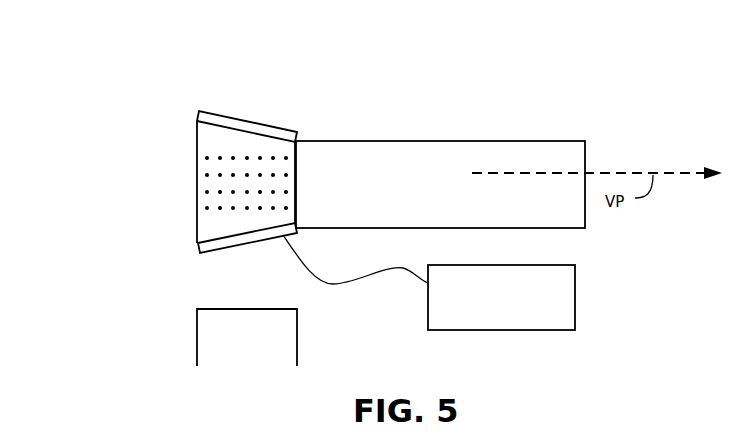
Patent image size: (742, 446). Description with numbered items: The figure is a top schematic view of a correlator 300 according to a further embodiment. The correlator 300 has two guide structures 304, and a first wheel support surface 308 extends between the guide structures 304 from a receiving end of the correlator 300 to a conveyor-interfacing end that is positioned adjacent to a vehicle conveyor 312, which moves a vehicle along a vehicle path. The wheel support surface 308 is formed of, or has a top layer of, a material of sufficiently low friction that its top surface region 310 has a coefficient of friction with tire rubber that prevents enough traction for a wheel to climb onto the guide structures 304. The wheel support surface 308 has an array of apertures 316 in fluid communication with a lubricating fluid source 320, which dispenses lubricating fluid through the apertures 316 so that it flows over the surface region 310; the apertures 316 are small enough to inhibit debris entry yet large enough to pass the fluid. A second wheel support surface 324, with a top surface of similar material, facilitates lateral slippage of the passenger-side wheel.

The correlator 300 is at (210, 90).
The guide structures 304 is at (239, 125).
The first wheel support surface 308 is at (207, 145).
The surface region 310 is at (233, 223).
The vehicle conveyor 312 is at (458, 155).
The apertures 316 is at (203, 190).
The lubricating fluid source 320 is at (429, 282).
The second wheel support surface 324 is at (292, 345).